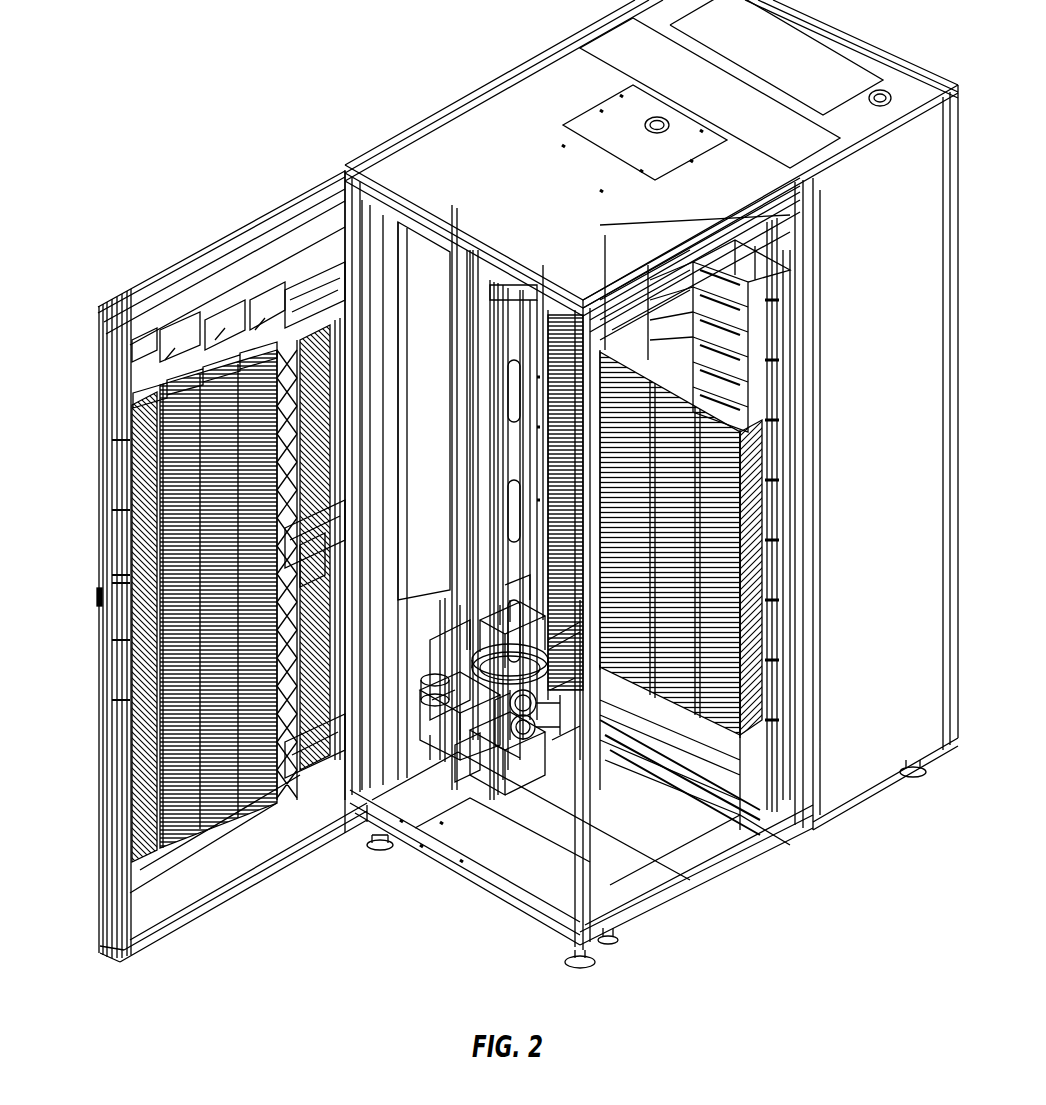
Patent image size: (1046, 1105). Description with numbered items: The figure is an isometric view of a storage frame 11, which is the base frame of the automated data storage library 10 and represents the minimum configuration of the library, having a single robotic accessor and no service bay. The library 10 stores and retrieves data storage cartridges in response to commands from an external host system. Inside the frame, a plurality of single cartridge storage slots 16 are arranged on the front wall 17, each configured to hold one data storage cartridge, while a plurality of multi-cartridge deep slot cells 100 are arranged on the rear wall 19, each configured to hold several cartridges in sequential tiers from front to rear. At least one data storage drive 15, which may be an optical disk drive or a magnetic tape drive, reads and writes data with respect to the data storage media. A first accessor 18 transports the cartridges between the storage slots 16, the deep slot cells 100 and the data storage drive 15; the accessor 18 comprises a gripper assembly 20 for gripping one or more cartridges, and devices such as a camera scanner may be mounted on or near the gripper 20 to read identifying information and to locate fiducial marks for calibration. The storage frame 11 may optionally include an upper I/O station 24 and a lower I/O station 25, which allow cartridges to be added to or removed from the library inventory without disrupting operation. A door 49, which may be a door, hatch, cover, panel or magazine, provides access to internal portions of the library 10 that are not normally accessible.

The automated data storage library 10 is at (262, 47).
The storage frame 11 is at (428, 916).
The door 49 is at (196, 233).
The front wall 17 is at (112, 562).
The storage slots 16 is at (128, 690).
The lower I/O station 25 is at (335, 612).
The upper I/O station 24 is at (340, 421).
The rear wall 19 is at (517, 323).
The data storage drive 15 is at (740, 320).
The multi-cartridge deep slot cells 100 is at (762, 532).
The first accessor 18 is at (497, 780).
The gripper assembly 20 is at (557, 763).